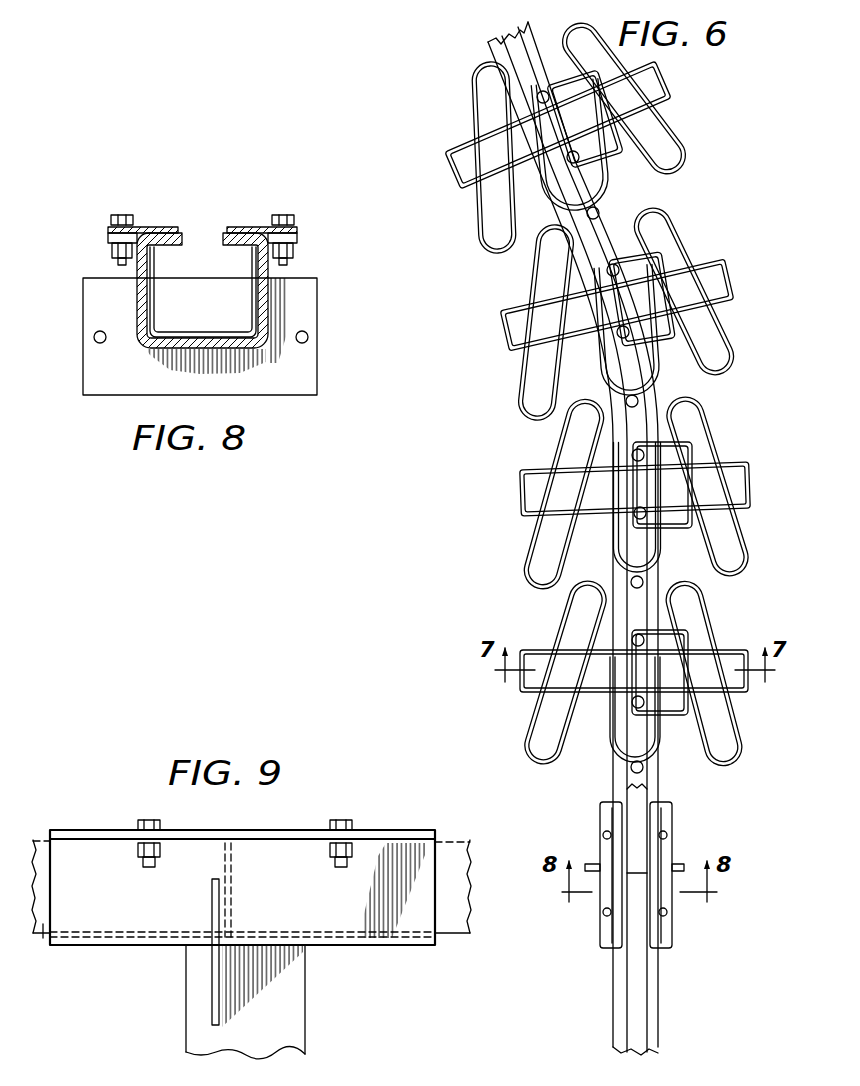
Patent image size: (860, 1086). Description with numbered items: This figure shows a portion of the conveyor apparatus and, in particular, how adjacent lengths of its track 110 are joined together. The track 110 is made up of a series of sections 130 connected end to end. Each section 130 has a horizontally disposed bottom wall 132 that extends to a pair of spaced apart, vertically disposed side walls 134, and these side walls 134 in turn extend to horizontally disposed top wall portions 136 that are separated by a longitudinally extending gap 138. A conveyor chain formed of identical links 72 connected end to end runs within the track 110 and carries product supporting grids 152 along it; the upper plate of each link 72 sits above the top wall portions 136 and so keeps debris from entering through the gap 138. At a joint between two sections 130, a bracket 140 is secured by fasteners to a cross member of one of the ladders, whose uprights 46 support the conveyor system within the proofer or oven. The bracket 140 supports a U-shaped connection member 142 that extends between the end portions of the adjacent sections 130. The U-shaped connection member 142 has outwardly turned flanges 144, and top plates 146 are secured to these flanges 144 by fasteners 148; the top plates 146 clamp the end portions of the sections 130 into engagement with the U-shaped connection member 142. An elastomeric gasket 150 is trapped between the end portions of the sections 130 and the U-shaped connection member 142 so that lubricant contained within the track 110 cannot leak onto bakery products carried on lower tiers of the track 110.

In FIG. 9, the upright 46 is at (293, 1040).
In FIG. 6, the link 72 is at (606, 222).
In FIG. 6, the track 110 is at (608, 780).
In FIG. 8, the track 110 is at (107, 212).
In FIG. 6, the section 130 is at (660, 790).
In FIG. 8, the section 130 is at (183, 227).
In FIG. 9, the section 130 is at (43, 938).
In FIG. 8, the bottom wall 132 is at (203, 292).
In FIG. 8, the side wall 134 is at (257, 297).
In FIG. 8, the top wall portion 136 is at (175, 247).
In FIG. 8, the gap 138 is at (222, 242).
In FIG. 6, the bracket 140 is at (679, 863).
In FIG. 8, the bracket 140 is at (130, 387).
In FIG. 9, the bracket 140 is at (212, 979).
In FIG. 8, the U-shaped connection member 142 is at (137, 307).
In FIG. 9, the U-shaped connection member 142 is at (301, 912).
In FIG. 8, the outwardly turned flange 144 is at (108, 240).
In FIG. 9, the outwardly turned flange 144 is at (176, 839).
In FIG. 6, the top plate 146 is at (600, 812).
In FIG. 8, the top plate 146 is at (147, 226).
In FIG. 9, the top plate 146 is at (248, 833).
In FIG. 8, the fastener 148 is at (110, 221).
In FIG. 9, the fastener 148 is at (137, 823).
In FIG. 8, the elastomeric gasket 150 is at (244, 342).
In FIG. 6, the product supporting grid 152 is at (697, 165).